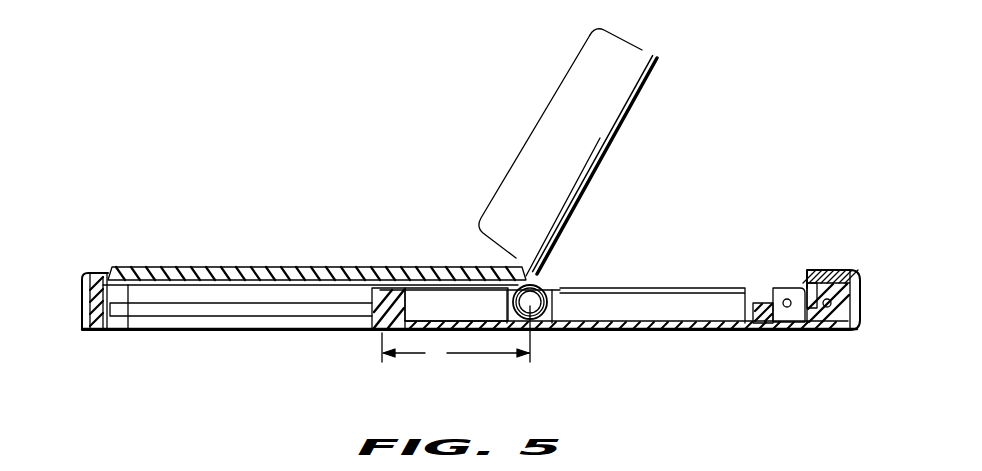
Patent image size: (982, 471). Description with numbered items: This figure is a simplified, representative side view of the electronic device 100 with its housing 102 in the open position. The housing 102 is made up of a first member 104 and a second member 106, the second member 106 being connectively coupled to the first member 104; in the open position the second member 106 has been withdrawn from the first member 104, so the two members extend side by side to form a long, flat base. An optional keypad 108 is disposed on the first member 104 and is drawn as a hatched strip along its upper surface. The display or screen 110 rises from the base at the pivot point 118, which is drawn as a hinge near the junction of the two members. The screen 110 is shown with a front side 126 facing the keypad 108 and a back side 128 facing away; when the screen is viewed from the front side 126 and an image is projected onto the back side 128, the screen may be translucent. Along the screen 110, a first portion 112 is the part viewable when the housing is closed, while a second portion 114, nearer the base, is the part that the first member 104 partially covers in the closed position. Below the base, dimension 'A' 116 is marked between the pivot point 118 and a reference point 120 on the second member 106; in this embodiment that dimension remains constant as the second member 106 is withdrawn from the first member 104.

The electronic device 100 is at (800, 106).
The housing 102 is at (480, 267).
The first member 104 is at (86, 270).
The second member 106 is at (860, 317).
The keypad 108 is at (216, 264).
The display or screen 110 is at (652, 76).
The first portion of the display or screen 112 is at (646, 53).
The second portion of the display or screen 114 is at (538, 118).
The dimension 'A' 116 is at (467, 357).
The pivot point 118 is at (531, 306).
The reference point 120 is at (380, 332).
The front side 126 is at (553, 227).
The back side 128 is at (590, 186).